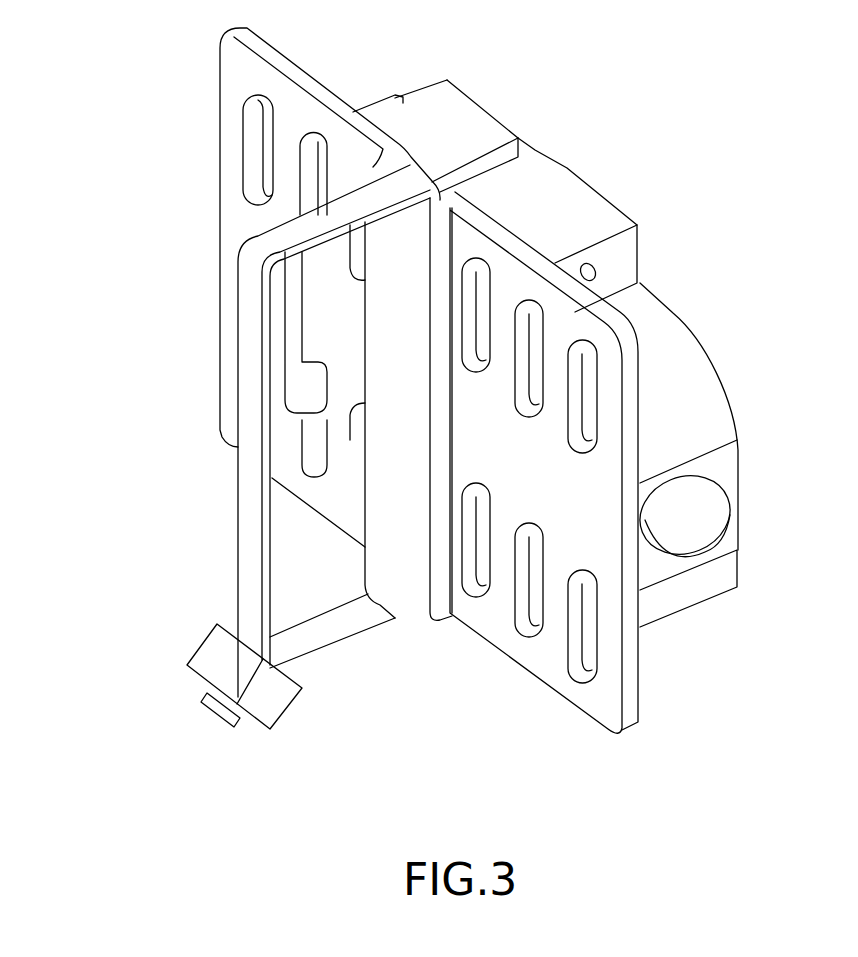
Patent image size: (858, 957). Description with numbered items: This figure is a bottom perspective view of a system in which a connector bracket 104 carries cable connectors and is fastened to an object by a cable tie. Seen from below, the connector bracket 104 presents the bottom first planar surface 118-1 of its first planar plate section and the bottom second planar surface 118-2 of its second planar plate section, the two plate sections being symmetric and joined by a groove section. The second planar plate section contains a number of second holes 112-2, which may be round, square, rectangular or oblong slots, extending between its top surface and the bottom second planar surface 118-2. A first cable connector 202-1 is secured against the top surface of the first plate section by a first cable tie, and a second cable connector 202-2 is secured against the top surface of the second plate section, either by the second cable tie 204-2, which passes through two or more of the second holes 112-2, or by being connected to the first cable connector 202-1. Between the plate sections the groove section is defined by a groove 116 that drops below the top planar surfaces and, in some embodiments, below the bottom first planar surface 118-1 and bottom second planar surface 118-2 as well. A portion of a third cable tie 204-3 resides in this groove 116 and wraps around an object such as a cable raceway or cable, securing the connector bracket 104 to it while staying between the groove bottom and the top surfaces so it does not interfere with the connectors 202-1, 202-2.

The connector bracket 104 is at (630, 537).
The second holes 112-2 is at (308, 147).
The groove 116 is at (392, 587).
The bottom first planar surface 118-1 is at (598, 547).
The bottom second planar surface 118-2 is at (237, 78).
The first cable connector 202-1 is at (700, 383).
The second cable connector 202-2 is at (470, 118).
The second cable tie 204-2 is at (293, 317).
The third cable tie 204-3 is at (210, 657).